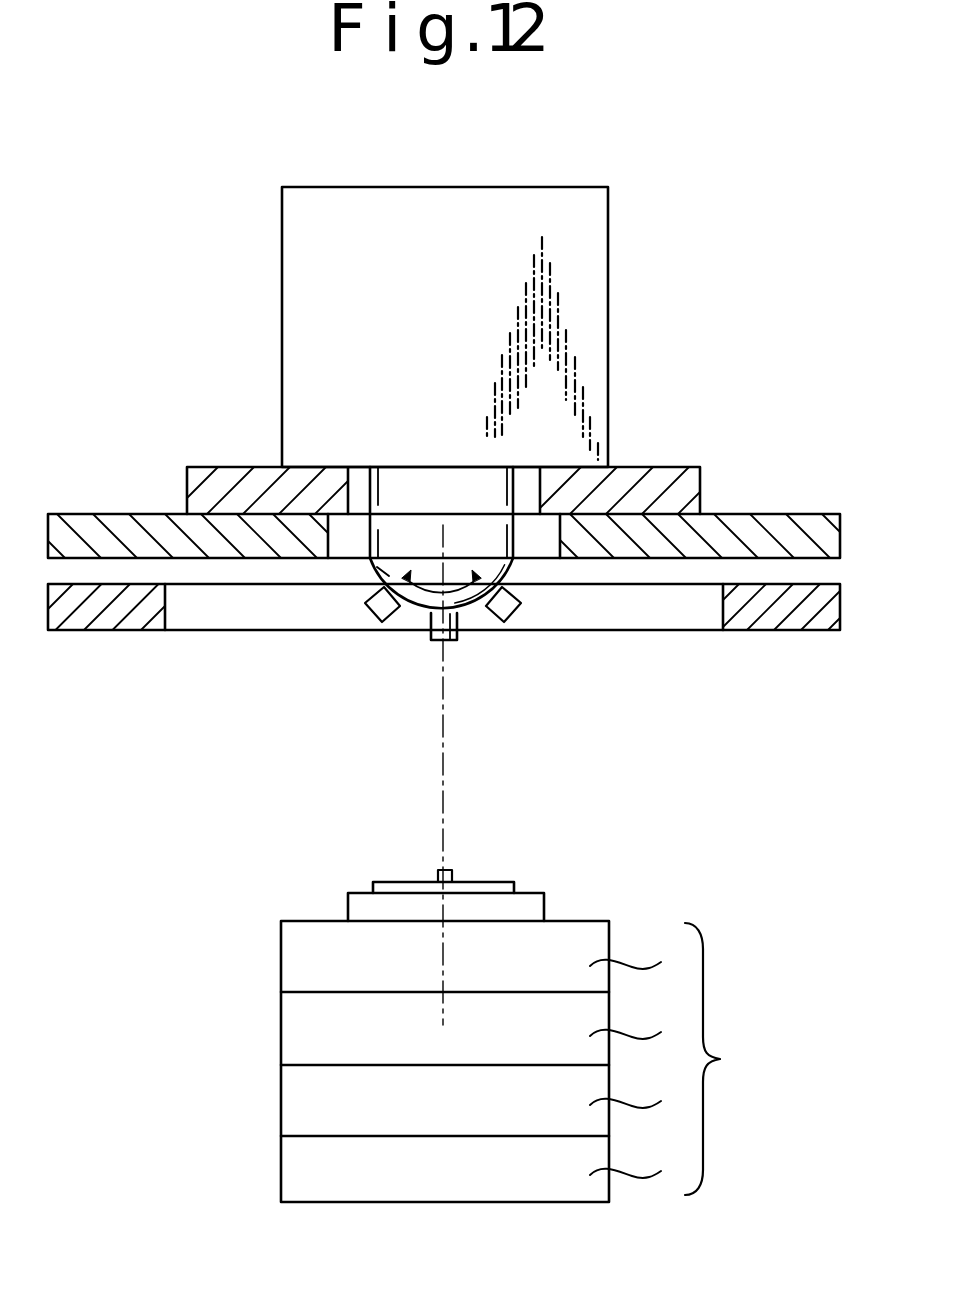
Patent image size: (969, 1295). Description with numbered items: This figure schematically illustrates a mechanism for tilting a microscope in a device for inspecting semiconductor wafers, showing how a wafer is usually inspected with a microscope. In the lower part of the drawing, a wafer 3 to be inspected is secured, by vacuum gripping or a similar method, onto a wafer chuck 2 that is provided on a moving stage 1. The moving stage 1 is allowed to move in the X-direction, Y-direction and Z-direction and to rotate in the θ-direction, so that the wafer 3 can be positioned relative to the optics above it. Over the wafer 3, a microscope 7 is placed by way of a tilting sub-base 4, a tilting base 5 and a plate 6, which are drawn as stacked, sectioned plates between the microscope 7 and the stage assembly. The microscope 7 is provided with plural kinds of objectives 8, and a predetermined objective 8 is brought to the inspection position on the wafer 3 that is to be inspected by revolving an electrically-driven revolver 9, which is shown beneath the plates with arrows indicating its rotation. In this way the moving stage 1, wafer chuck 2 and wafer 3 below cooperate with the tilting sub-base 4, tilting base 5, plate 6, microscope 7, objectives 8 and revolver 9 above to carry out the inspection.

The moving stage 1 is at (517, 1061).
The wafer chuck 2 is at (531, 907).
The wafer 3 is at (497, 887).
The tilting sub-base 4 is at (793, 618).
The tilting base 5 is at (807, 525).
The plate 6 is at (658, 478).
The microscope 7 is at (577, 292).
The objectives 8 is at (447, 642).
The electrically-driven revolver 9 is at (382, 570).